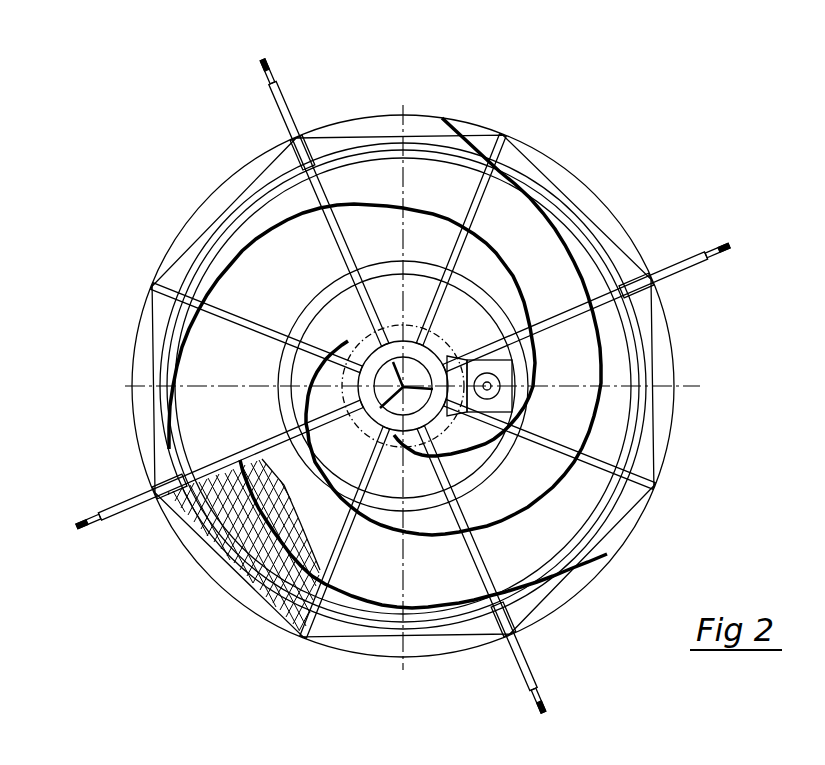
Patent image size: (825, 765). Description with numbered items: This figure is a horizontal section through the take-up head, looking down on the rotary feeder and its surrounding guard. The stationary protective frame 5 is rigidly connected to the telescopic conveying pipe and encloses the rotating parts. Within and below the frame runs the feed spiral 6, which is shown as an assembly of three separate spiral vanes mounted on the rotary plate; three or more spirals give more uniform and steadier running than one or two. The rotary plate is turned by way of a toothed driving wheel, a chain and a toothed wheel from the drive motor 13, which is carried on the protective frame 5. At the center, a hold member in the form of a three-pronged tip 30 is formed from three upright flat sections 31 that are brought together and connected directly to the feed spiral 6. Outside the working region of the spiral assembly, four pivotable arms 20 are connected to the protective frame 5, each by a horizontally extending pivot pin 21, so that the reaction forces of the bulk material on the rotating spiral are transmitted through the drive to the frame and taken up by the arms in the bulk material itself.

The protective frame 5 is at (489, 165).
The pivotable arm 20 is at (587, 294).
The pivot pin 21 is at (641, 295).
The drive motor 13 is at (501, 392).
The tip 30 is at (382, 405).
The upright flat sections 31 is at (400, 433).
The feed spiral 6 is at (601, 556).